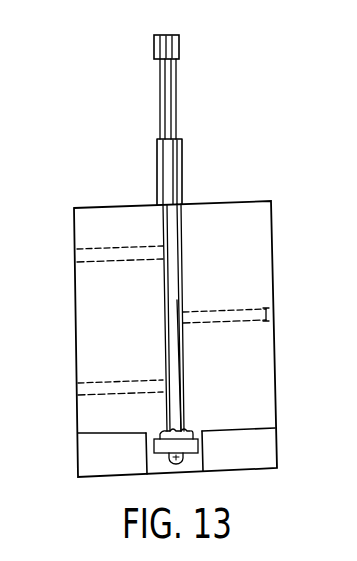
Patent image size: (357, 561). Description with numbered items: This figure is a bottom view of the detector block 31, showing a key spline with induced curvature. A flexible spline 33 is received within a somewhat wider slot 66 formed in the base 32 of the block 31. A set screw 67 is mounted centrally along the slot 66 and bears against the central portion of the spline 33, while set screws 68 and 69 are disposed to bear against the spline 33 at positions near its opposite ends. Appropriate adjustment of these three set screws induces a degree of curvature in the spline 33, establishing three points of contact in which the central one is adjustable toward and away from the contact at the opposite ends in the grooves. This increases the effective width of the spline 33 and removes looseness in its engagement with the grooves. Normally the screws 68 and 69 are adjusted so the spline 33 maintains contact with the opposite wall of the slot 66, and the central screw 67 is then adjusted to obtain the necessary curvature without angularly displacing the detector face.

The detector block 31 is at (282, 411).
The base 32 is at (279, 389).
The flexible spline 33 is at (176, 283).
The slot 66 is at (182, 350).
The set screw 67 is at (233, 311).
The set screw 68 is at (105, 248).
The set screw 69 is at (117, 382).